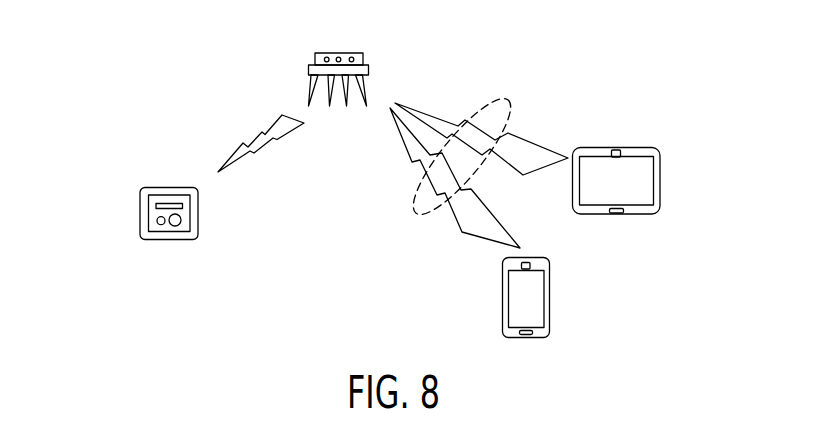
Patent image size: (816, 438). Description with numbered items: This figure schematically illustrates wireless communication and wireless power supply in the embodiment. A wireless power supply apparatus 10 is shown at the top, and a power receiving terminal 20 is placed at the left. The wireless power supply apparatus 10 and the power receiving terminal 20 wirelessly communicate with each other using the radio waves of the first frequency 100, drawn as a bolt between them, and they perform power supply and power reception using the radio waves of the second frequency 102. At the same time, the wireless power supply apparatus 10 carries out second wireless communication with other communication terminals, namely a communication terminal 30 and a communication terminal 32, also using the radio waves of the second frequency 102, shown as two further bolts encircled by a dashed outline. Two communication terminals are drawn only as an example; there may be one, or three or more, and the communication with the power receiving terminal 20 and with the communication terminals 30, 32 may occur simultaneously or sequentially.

The wireless power supply apparatus 10 is at (363, 55).
The radio waves of the first frequency 100 is at (243, 143).
The power receiving terminal 20 is at (139, 213).
The radio waves of the second frequency 102 is at (507, 102).
The communication terminal 32 is at (660, 178).
The communication terminal 30 is at (550, 298).